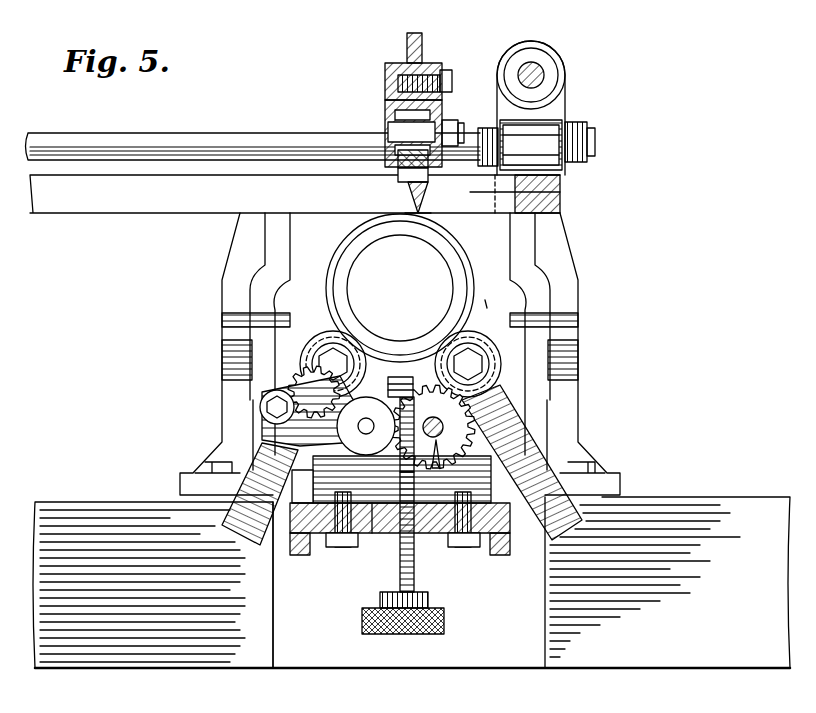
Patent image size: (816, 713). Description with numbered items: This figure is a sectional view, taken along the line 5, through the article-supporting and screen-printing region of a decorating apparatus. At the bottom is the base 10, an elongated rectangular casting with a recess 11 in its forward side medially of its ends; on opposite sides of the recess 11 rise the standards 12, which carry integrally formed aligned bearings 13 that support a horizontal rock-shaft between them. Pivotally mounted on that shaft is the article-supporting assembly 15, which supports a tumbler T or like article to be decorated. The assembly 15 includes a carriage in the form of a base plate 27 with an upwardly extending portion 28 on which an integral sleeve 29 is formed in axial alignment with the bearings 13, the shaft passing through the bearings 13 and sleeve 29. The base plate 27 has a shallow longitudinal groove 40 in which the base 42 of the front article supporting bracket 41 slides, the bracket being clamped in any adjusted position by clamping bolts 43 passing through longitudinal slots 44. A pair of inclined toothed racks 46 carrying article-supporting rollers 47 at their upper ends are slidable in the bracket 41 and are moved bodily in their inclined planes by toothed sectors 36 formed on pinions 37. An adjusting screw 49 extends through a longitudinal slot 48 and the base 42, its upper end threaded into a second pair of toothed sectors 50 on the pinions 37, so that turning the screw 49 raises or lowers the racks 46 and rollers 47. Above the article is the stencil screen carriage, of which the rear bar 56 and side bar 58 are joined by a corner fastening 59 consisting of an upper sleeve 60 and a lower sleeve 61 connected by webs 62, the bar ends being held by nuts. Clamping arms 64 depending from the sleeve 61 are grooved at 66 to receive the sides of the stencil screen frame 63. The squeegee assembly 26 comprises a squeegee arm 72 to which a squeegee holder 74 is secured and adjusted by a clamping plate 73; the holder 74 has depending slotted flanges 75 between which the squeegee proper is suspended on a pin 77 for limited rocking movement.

The section line 5 is at (168, 215).
The base 10 is at (128, 668).
The recess 11 is at (342, 660).
The standards 12 is at (285, 240).
The bearings 13 is at (222, 323).
The article-supporting assembly 15 is at (490, 293).
The squeegee assembly 26 is at (380, 66).
The base plate 27 is at (420, 540).
The upwardly extending portion 28 is at (420, 377).
The sleeve 29 is at (295, 325).
The toothed sectors 36 is at (472, 413).
The pinions 37 is at (440, 470).
The groove 40 is at (315, 535).
The front article supporting bracket 41 is at (520, 470).
The base 42 is at (480, 480).
The clamping bolts 43 is at (340, 545).
The longitudinal slots 44 is at (358, 540).
The inclined toothed racks 46 is at (370, 398).
The article-supporting rollers 47 is at (335, 340).
The longitudinal slot 48 is at (380, 540).
The adjusting screw 49 is at (428, 600).
The second pair of toothed sectors 50 is at (418, 388).
The rear bar 56 is at (238, 142).
The side bar 58 is at (545, 78).
The corner fastening 59 is at (565, 118).
The upper sleeve 60 is at (555, 50).
The lower sleeve 61 is at (540, 145).
The webs 62 is at (552, 128).
The stencil screen frame 63 is at (560, 200).
The clamping arms 64 is at (562, 182).
The grooves 66 is at (562, 192).
The squeegee arm 72 is at (432, 22).
The clamping plate 73 is at (445, 66).
The squeegee holder 74 is at (385, 108).
The flanges 75 is at (388, 155).
The pin 77 is at (388, 130).
The tumbler T is at (462, 248).